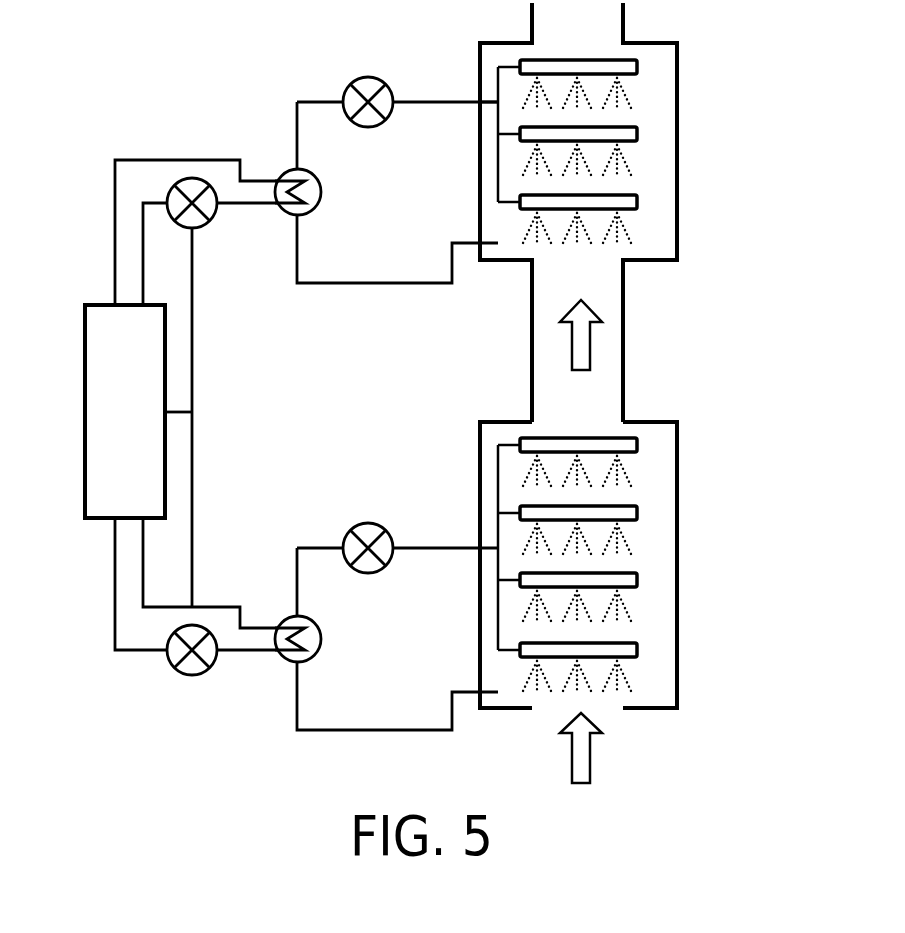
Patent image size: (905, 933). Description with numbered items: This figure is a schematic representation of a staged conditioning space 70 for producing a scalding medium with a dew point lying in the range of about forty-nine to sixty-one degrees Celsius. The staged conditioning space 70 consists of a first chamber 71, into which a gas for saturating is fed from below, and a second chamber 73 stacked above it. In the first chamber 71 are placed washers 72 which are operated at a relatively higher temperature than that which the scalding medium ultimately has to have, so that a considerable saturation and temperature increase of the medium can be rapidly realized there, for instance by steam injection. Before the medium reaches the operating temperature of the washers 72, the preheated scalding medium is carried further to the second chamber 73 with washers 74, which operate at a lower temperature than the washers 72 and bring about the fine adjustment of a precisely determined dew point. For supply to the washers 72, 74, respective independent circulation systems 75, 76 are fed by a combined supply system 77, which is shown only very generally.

The staged conditioning space 70 is at (753, 708).
The first chamber 71 is at (655, 535).
The washers 72 is at (637, 513).
The second chamber 73 is at (655, 160).
The washers 74 is at (637, 134).
The circulation system 75 is at (318, 547).
The circulation system 76 is at (318, 101).
The combined supply system 77 is at (77, 272).